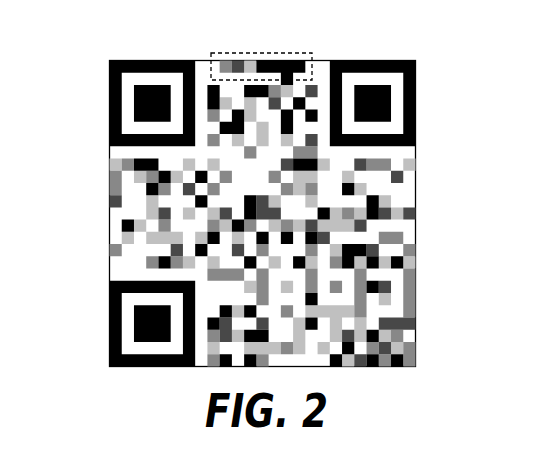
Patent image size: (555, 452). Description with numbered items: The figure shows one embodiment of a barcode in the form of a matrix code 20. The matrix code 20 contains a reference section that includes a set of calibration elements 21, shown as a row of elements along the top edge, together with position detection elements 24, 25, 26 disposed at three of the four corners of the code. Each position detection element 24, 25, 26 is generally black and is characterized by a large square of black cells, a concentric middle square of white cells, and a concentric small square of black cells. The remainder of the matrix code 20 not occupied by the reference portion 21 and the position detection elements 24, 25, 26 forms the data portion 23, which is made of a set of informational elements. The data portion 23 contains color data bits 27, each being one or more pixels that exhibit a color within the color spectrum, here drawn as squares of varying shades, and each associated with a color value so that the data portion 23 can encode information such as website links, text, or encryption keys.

The matrix code 20 is at (318, 195).
The set of calibration elements 21 is at (263, 53).
The data portion 23 is at (263, 214).
The position detection element 24 is at (153, 324).
The position detection element 25 is at (153, 104).
The position detection element 26 is at (373, 104).
The color data bits 27 is at (416, 248).